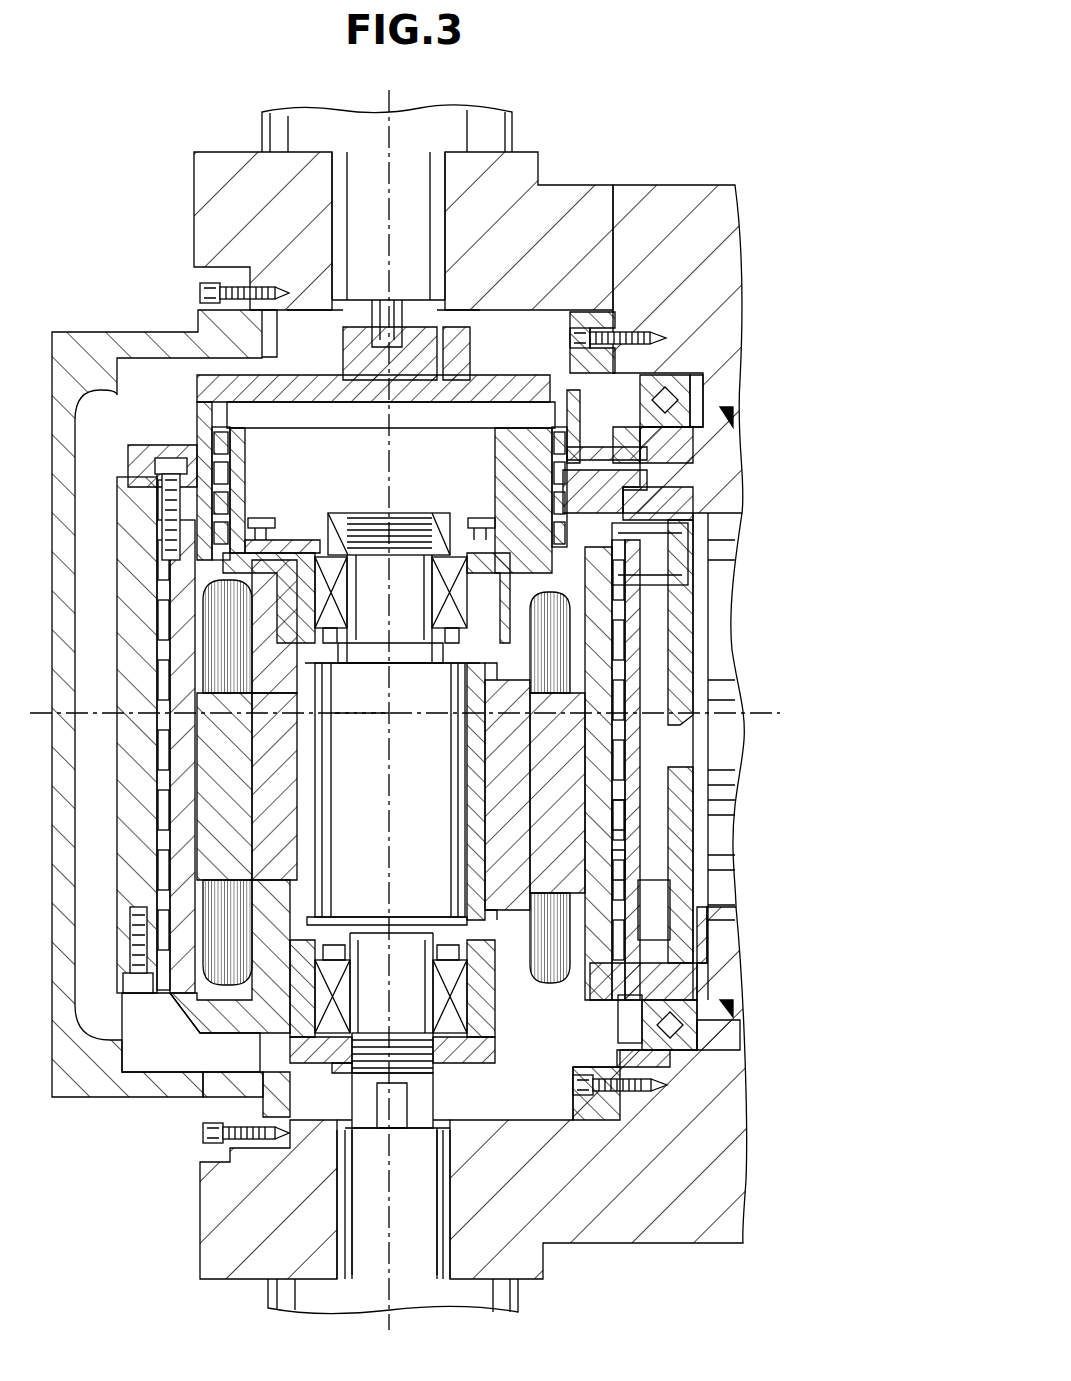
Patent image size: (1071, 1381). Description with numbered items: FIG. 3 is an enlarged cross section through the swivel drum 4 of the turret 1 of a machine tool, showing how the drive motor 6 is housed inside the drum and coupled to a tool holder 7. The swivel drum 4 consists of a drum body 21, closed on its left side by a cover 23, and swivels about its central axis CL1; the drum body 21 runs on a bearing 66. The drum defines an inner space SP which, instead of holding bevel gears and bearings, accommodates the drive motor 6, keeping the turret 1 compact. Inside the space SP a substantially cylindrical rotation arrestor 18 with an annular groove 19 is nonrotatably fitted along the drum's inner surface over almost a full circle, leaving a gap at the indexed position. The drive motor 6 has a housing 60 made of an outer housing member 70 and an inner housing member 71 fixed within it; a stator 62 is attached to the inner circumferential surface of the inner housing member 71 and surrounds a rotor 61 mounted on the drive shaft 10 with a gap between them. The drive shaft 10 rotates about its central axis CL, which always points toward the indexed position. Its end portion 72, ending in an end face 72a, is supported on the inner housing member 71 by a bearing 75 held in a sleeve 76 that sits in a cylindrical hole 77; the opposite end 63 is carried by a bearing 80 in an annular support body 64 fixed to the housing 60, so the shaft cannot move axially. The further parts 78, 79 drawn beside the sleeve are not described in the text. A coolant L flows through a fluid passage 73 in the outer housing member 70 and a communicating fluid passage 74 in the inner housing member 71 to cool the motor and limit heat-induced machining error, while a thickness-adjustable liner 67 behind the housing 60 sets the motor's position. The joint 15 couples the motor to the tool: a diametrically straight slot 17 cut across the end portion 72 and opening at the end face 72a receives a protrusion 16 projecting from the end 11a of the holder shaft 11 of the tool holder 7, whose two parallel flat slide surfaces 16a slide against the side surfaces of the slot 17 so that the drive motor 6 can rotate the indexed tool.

The turret 1 is at (672, 145).
The swivel drum 4 is at (574, 183).
The drive motor 6 is at (150, 1020).
The tool holder 7 is at (513, 126).
The drive shaft 10 is at (366, 784).
The holder shaft 11 is at (432, 1194).
The end of holder shaft 11a is at (450, 1130).
The joint 15 is at (356, 1130).
The protrusion 16 is at (370, 330).
The flat slide surfaces 16a is at (345, 1128).
The slot 17 is at (385, 1128).
The rotation arrestor 18 is at (527, 375).
The annular groove 19 is at (394, 340).
The drum body 21 is at (636, 185).
The cover 23 is at (106, 332).
The housing 60 is at (696, 791).
The rotor 61 is at (520, 790).
The stator 62 is at (572, 757).
The opposite end of drive shaft 63 is at (420, 590).
The support body 64 is at (497, 445).
The bearing 66 is at (700, 392).
The liner 67 is at (700, 952).
The outer housing member 70 is at (693, 830).
The inner housing member 71 is at (612, 862).
The end portion of drive shaft 72 is at (420, 1002).
The end face of drive shaft 72a is at (433, 1130).
The fluid passage 73 is at (657, 672).
The fluid passage 74 is at (620, 830).
The bearing 75 is at (356, 960).
The sleeve 76 is at (272, 1018).
The cylindrical hole 77 is at (458, 960).
The lower plate 78 is at (313, 1063).
The lower ring 79 is at (342, 1073).
The bearing 80 is at (418, 663).
The central axis of drive shaft CL is at (391, 854).
The central axis of swivel drum CL1 is at (345, 712).
The inner space SP is at (486, 350).
The coolant L is at (675, 742).